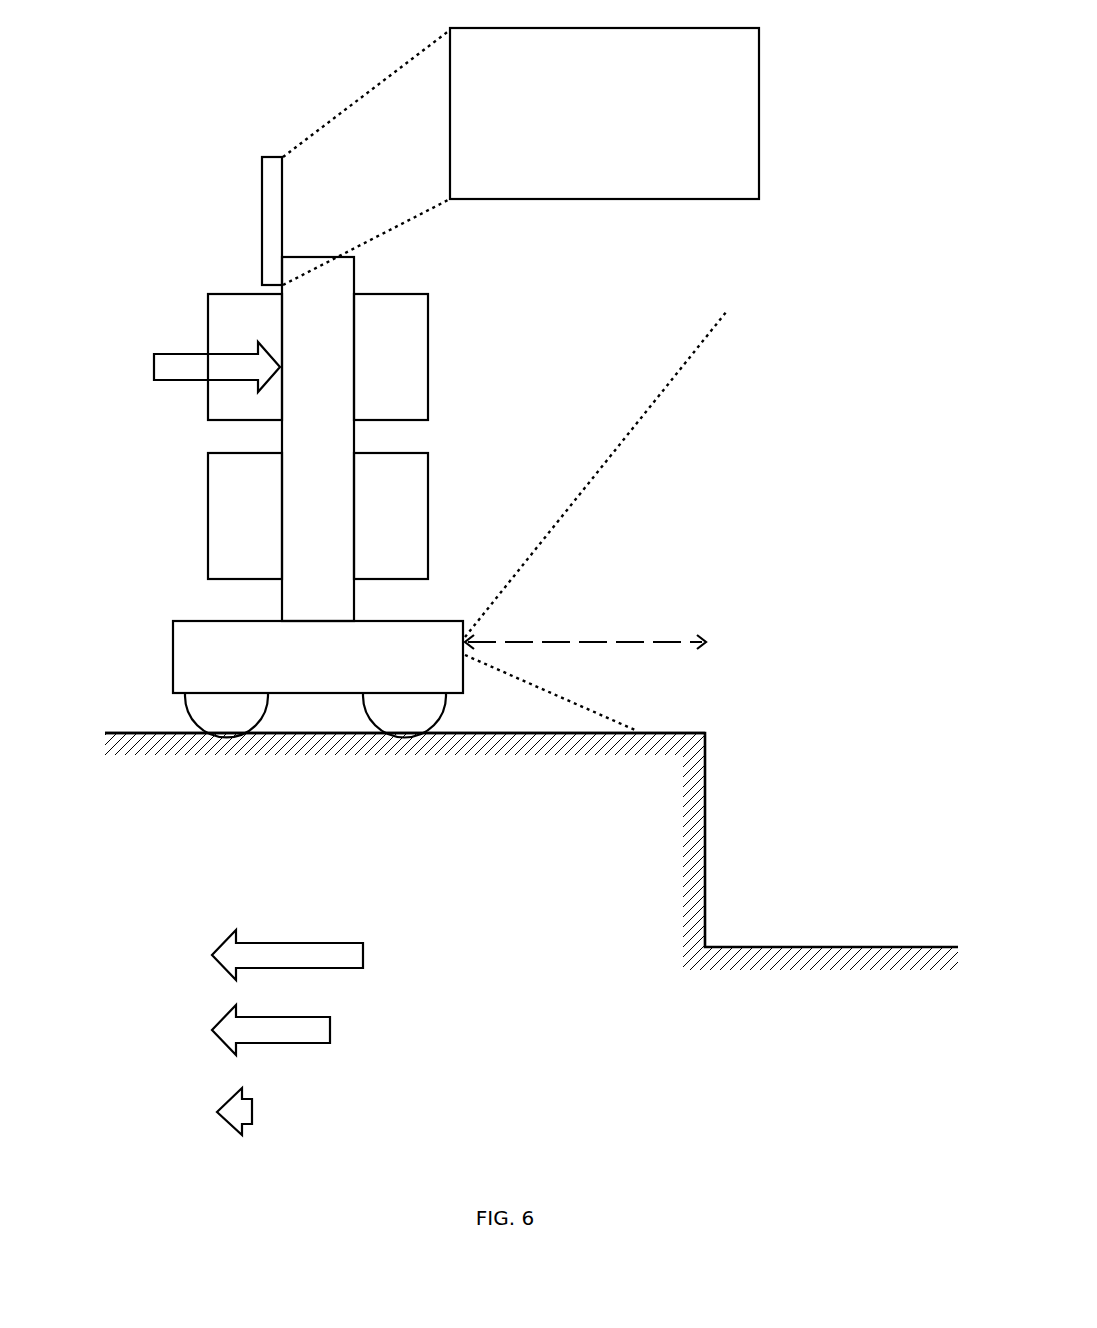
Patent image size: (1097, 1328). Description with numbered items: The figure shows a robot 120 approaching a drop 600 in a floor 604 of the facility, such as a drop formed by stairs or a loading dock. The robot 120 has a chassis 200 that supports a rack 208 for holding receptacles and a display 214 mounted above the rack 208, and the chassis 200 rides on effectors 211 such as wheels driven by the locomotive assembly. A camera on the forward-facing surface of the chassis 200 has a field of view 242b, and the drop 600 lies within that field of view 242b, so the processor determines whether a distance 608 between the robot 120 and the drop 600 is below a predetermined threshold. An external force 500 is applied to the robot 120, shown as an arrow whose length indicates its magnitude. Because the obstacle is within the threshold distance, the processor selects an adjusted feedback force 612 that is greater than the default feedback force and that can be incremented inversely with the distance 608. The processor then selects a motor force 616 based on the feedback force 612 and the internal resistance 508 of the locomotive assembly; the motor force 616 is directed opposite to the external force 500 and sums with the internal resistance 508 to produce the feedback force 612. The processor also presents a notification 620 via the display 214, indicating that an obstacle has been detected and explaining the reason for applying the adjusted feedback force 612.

The robot 120 is at (150, 250).
The display 214 is at (262, 185).
The notification 620 is at (668, 92).
The rack 208 is at (318, 439).
The external force 500 is at (154, 368).
The chassis 200 is at (318, 657).
The effector 211 is at (227, 717).
The second field of view 242b is at (654, 403).
The distance 608 is at (585, 629).
The drop 600 is at (706, 777).
The floor 604 is at (535, 745).
The adjusted feedback force 612 is at (212, 955).
The internal resistance 508 is at (212, 1030).
The motor force 616 is at (217, 1112).